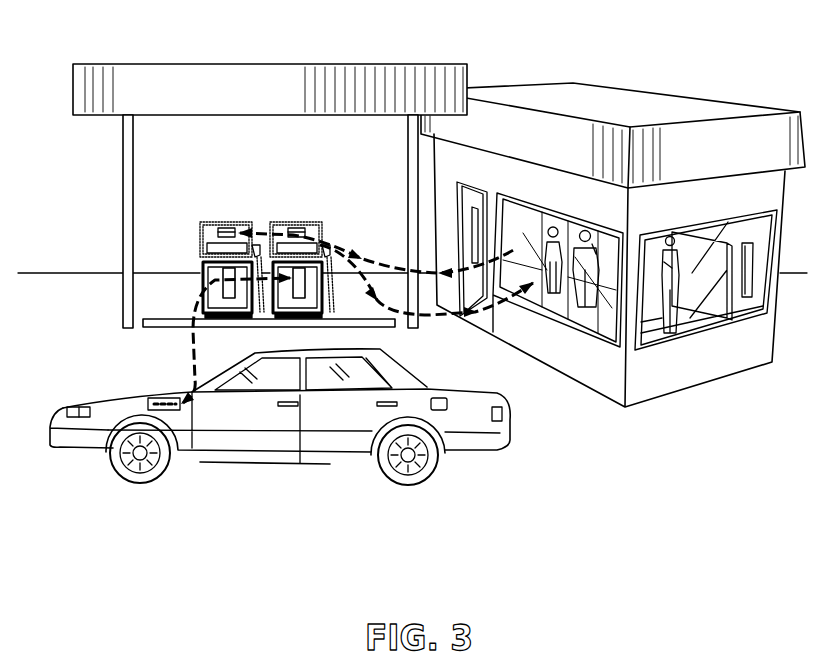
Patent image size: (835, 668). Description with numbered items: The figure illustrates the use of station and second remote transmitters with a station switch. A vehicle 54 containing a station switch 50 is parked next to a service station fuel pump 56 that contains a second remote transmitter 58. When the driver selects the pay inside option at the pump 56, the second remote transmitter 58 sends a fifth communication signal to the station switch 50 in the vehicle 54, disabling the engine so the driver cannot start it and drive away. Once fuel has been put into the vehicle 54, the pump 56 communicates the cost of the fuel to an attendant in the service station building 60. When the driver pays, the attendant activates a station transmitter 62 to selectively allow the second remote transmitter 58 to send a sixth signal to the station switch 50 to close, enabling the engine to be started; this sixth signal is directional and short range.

The station switch 50 is at (157, 402).
The vehicle 54 is at (427, 385).
The service station fuel pump 56 is at (217, 225).
The second remote transmitter 58 is at (227, 278).
The service station building 60 is at (640, 102).
The station transmitter 62 is at (587, 290).